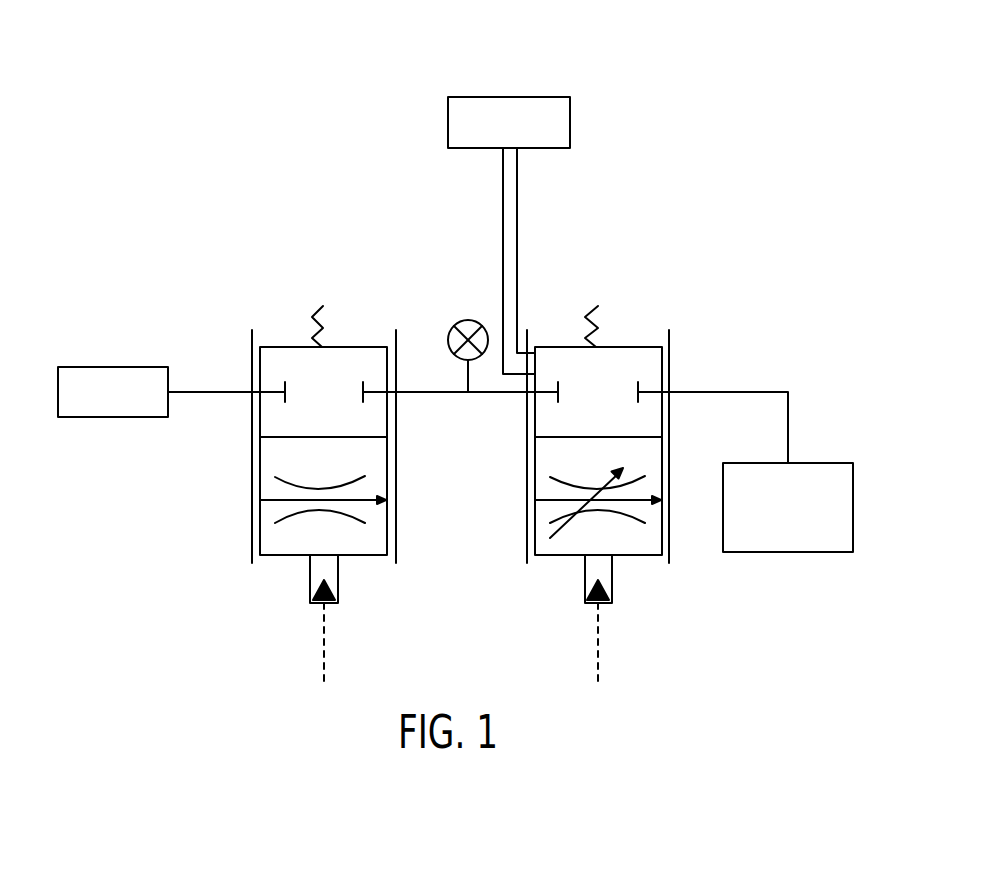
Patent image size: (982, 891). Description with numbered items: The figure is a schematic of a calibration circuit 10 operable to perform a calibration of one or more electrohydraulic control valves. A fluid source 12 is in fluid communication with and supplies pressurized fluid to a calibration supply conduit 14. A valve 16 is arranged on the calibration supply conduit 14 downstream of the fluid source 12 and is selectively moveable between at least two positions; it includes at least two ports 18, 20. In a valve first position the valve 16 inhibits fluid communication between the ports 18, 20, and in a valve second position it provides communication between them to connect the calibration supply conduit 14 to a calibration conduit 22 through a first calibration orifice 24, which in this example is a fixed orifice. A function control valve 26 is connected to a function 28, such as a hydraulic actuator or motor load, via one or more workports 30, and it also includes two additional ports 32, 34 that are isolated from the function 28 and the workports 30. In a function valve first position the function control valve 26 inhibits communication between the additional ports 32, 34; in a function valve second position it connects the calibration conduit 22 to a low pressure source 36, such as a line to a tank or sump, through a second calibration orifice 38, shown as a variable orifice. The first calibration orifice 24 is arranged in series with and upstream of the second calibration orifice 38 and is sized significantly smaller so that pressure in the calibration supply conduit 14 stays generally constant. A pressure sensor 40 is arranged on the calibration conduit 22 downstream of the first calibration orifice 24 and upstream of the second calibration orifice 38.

The calibration circuit 10 is at (628, 58).
The fluid source 12 is at (113, 367).
The calibration supply conduit 14 is at (215, 393).
The valve 16 is at (359, 334).
The port 18 is at (255, 390).
The port 20 is at (388, 392).
The calibration conduit 22 is at (430, 395).
The first calibration orifice 24 is at (296, 482).
The function control valve 26 is at (649, 334).
The function 28 is at (510, 97).
The workports 30 is at (535, 373).
The additional port 32 is at (530, 392).
The additional port 34 is at (664, 392).
The low pressure source 36 is at (828, 463).
The second calibration orifice 38 is at (623, 518).
The pressure sensor 40 is at (455, 330).